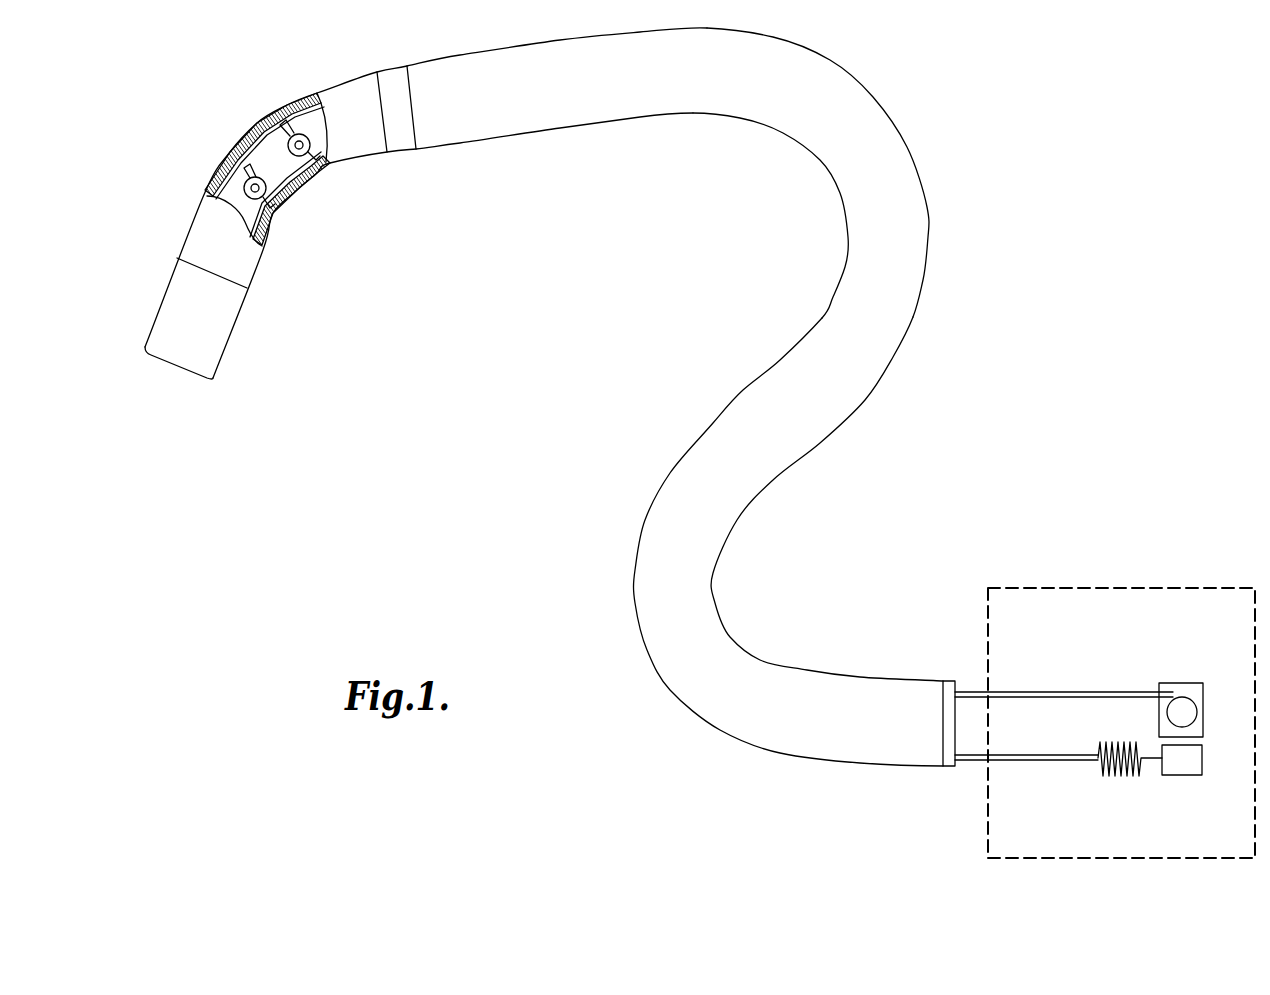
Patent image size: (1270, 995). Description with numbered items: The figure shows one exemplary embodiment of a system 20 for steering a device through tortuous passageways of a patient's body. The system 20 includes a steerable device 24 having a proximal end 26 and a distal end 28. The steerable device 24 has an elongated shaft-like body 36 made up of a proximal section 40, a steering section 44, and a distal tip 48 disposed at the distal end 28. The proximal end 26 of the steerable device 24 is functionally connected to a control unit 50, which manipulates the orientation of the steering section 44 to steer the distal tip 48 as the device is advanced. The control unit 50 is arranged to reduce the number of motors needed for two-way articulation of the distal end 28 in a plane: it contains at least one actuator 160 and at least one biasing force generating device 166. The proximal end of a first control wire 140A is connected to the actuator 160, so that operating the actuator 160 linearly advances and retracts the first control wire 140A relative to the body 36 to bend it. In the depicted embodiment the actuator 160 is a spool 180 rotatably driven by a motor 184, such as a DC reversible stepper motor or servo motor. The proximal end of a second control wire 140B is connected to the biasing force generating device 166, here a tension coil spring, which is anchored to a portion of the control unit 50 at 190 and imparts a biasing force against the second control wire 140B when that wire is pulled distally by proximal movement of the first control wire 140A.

The system 20 is at (1065, 170).
The steerable device 24 is at (452, 162).
The proximal end 26 is at (858, 674).
The distal end 28 is at (252, 284).
The elongated shaft-like body 36 is at (862, 402).
The proximal section 40 is at (848, 264).
The steering section 44 is at (340, 87).
The distal tip 48 is at (217, 363).
The control unit 50 is at (1118, 588).
The first control wire 140A is at (1040, 690).
The second control wire 140B is at (1025, 762).
The actuator 160 is at (1179, 668).
The biasing force generating device 166 is at (1107, 780).
The spool 180 is at (1192, 717).
The motor 184 is at (1204, 698).
The anchor 190 is at (1174, 776).